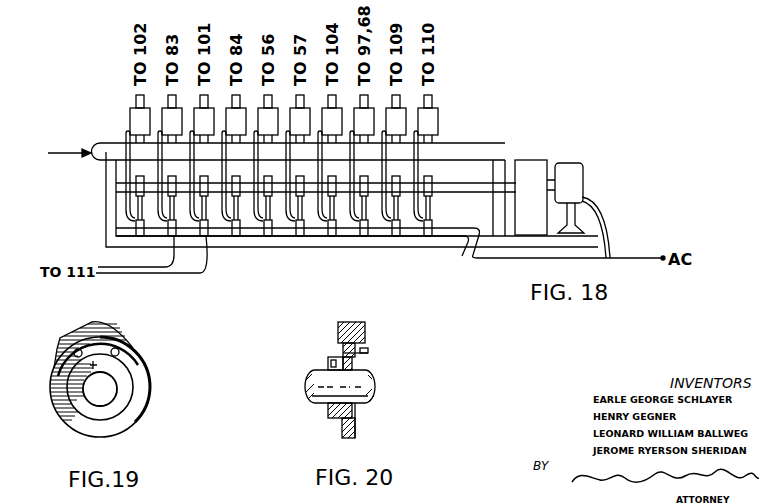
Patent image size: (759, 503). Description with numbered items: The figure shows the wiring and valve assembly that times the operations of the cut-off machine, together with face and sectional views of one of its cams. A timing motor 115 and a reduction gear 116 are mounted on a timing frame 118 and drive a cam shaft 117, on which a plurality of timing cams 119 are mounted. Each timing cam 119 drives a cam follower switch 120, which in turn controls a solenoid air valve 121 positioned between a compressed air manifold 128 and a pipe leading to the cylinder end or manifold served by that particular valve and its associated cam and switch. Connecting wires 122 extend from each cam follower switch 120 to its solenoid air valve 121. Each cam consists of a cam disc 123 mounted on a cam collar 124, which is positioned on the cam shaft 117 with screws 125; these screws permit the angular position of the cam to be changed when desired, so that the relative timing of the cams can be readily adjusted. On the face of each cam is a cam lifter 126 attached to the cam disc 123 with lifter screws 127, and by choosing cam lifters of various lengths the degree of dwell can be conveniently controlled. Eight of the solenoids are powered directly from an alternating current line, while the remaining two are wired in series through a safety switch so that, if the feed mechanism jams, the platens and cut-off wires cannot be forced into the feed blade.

In FIG. 18, the timing motor 115 is at (568, 163).
In FIG. 18, the reduction gear 116 is at (532, 160).
In FIG. 18, the cam shaft 117 is at (118, 197).
In FIG. 20, the cam shaft 117 is at (372, 382).
In FIG. 18, the timing frame 118 is at (106, 229).
In FIG. 18, the timing cam 119 is at (436, 178).
In FIG. 20, the timing cam 119 is at (357, 425).
In FIG. 18, the cam follower switch 120 is at (151, 240).
In FIG. 18, the solenoid air valve 121 is at (128, 110).
In FIG. 18, the connecting wires 122 is at (127, 134).
In FIG. 20, the cam disc 123 is at (342, 433).
In FIG. 20, the cam collar 124 is at (328, 412).
In FIG. 19, the screws 125 is at (81, 393).
In FIG. 20, the screws 125 is at (340, 356).
In FIG. 19, the cam lifter 126 is at (90, 322).
In FIG. 20, the cam lifter 126 is at (365, 325).
In FIG. 19, the lifter screws 127 is at (119, 349).
In FIG. 20, the lifter screws 127 is at (368, 350).
In FIG. 18, the compressed air manifold 128 is at (471, 143).